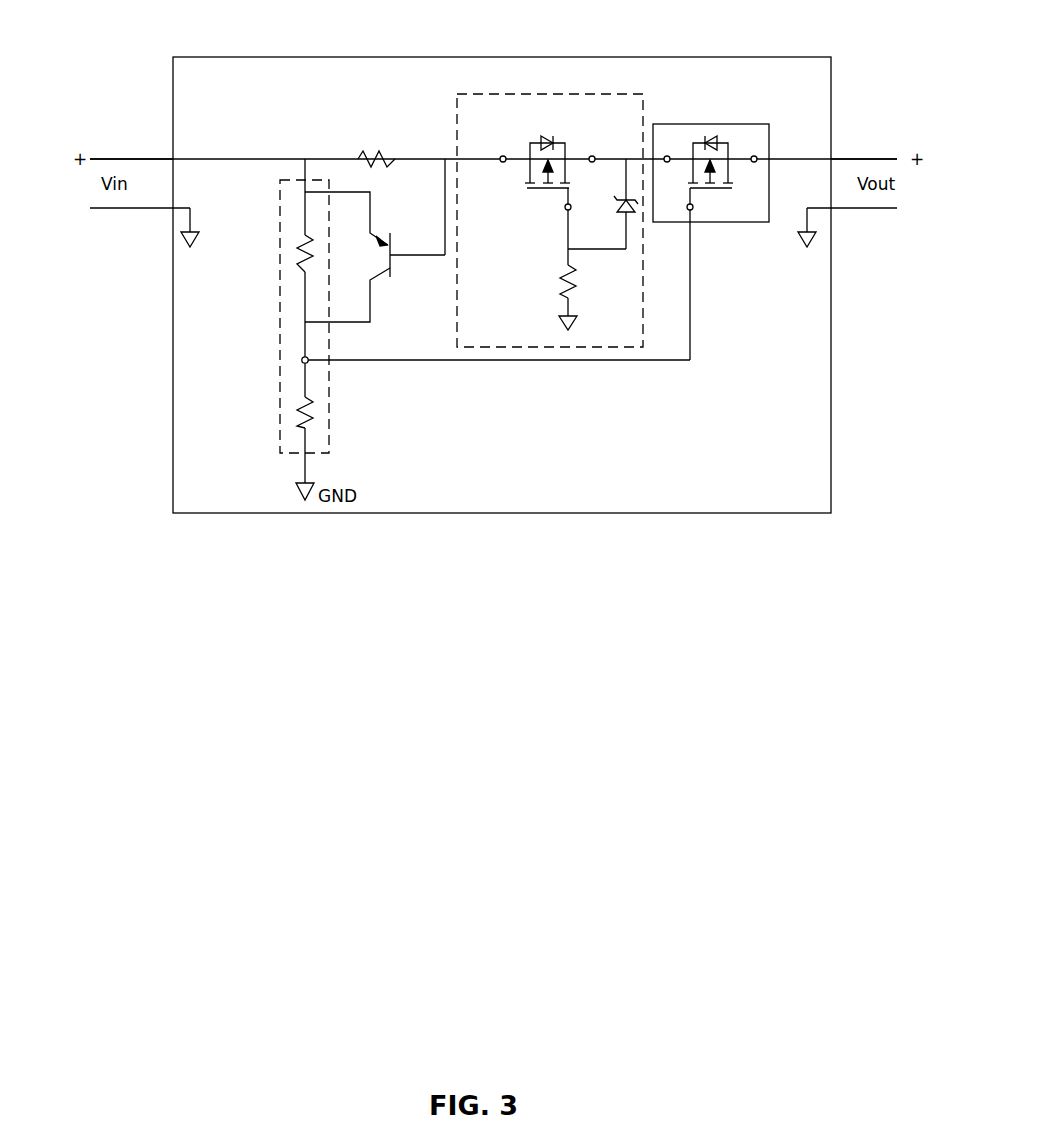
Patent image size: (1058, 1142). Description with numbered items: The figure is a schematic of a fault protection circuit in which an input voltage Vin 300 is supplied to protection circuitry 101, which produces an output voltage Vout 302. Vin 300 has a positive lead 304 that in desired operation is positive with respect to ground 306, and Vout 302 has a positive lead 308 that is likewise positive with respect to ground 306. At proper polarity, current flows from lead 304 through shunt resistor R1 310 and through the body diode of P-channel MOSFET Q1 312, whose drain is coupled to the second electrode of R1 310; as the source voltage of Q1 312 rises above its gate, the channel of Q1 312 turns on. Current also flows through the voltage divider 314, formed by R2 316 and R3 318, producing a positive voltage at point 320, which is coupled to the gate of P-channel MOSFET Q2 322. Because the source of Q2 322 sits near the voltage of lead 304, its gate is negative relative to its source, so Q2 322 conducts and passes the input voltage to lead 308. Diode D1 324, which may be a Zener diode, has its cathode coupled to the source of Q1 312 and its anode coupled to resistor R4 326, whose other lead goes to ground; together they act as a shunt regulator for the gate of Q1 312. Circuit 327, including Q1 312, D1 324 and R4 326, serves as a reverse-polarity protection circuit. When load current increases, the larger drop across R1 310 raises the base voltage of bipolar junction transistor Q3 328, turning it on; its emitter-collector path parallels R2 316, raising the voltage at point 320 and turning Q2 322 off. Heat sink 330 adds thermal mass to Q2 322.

The protection circuitry 101 is at (618, 57).
The input voltage Vin 300 is at (103, 80).
The output voltage Vout 302 is at (880, 89).
The positive lead 304 is at (150, 158).
The ground 306 is at (141, 208).
The positive lead 308 is at (865, 158).
The shunt resistor R1 310 is at (380, 140).
The P-channel MOSFET Q1 312 is at (527, 148).
The voltage divider 314 is at (330, 405).
The resistor R2 316 is at (302, 258).
The resistor R3 318 is at (305, 400).
The point 320 is at (310, 363).
The P-channel MOSFET Q2 322 is at (688, 147).
The diode D1 324 is at (633, 214).
The resistor R4 326 is at (553, 278).
The circuit 327 is at (576, 347).
The bipolar junction transistor Q3 328 is at (381, 283).
The heat sink 330 is at (693, 124).